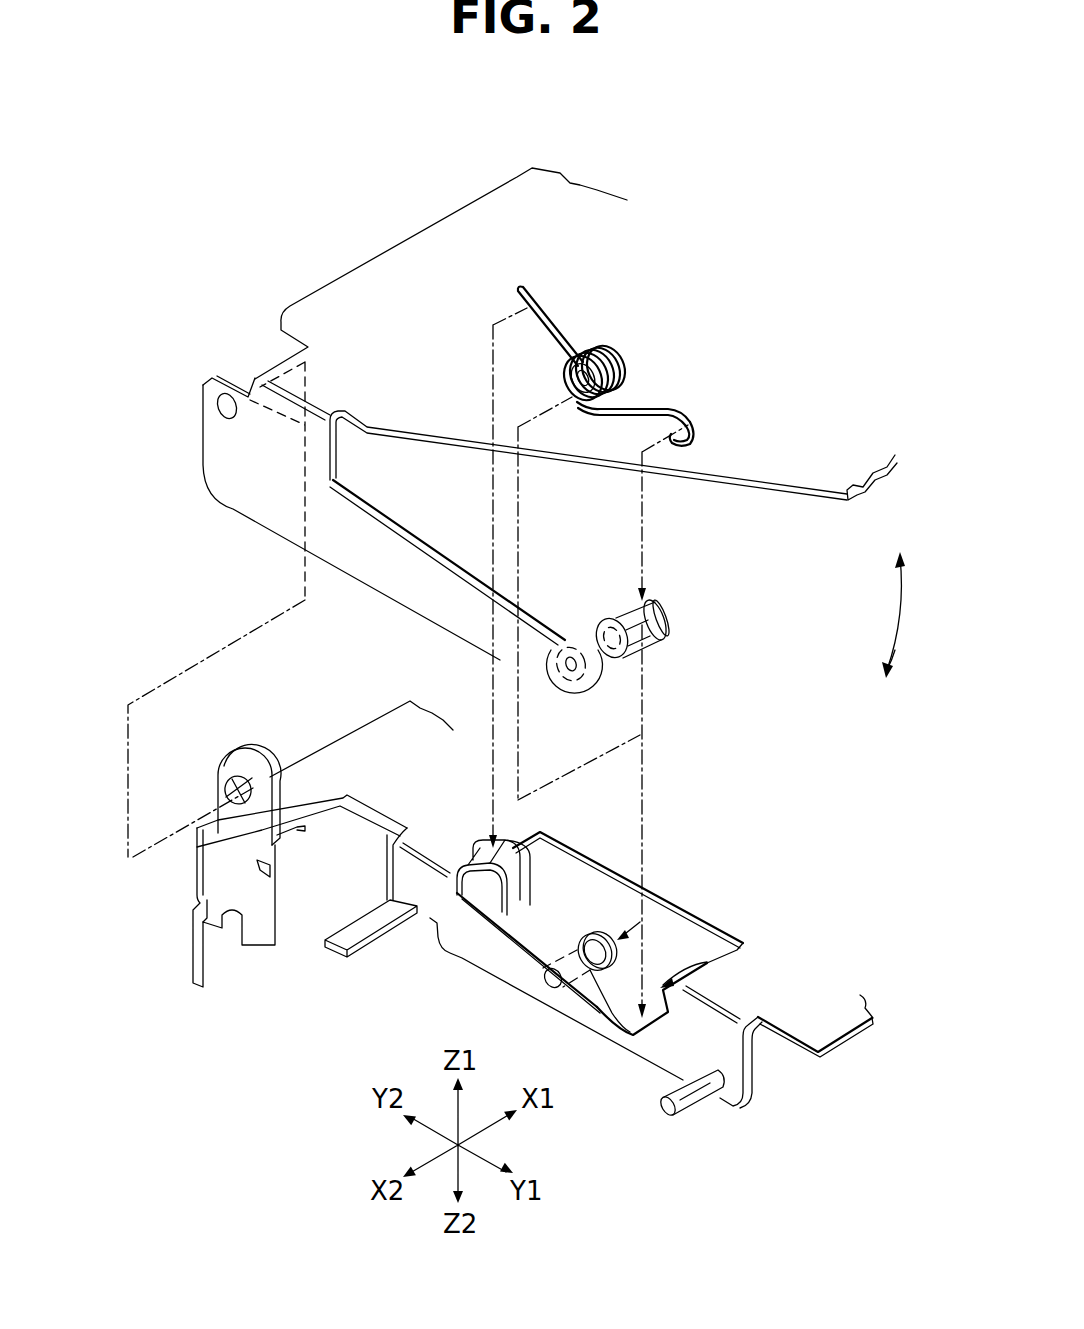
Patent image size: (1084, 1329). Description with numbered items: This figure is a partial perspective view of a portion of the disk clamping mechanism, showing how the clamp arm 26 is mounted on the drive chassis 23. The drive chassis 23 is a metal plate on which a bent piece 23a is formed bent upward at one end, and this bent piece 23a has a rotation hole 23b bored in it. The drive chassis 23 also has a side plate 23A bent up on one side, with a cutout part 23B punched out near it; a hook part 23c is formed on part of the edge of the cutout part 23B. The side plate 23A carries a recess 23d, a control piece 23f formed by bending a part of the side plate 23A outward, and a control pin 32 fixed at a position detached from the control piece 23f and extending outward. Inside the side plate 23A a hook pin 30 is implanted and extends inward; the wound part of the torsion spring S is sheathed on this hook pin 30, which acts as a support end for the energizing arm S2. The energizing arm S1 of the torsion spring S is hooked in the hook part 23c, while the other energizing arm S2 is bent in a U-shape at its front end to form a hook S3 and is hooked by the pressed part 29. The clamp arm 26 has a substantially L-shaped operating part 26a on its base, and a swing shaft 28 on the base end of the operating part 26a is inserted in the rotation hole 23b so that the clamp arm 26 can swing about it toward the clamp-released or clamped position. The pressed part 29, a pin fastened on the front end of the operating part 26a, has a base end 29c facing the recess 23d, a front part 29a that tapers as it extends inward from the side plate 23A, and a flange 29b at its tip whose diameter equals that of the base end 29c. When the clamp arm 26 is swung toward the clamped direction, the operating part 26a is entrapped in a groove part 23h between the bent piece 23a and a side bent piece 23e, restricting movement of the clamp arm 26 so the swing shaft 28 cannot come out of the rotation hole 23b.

The clamp arm 26 is at (344, 295).
The operating part 26a is at (430, 562).
The swing shaft 28 is at (252, 380).
The torsion spring S is at (647, 363).
The energizing arm S1 is at (551, 327).
The energizing arm S2 is at (662, 407).
The hook S3 is at (693, 438).
The pressed part 29 is at (665, 641).
The front part 29a is at (652, 640).
The flange 29b is at (660, 603).
The base end 29c is at (598, 635).
The drive chassis 23 is at (510, 943).
The bent piece 23a is at (243, 770).
The rotation hole 23b is at (227, 797).
The hook part 23c is at (510, 893).
The recess 23d is at (700, 962).
The side bent piece 23e is at (225, 867).
The control piece 23f is at (357, 933).
The groove part 23h is at (283, 857).
The side plate 23A is at (733, 1073).
The cutout part 23B is at (690, 957).
The hook pin 30 is at (590, 937).
The control pin 32 is at (702, 1100).